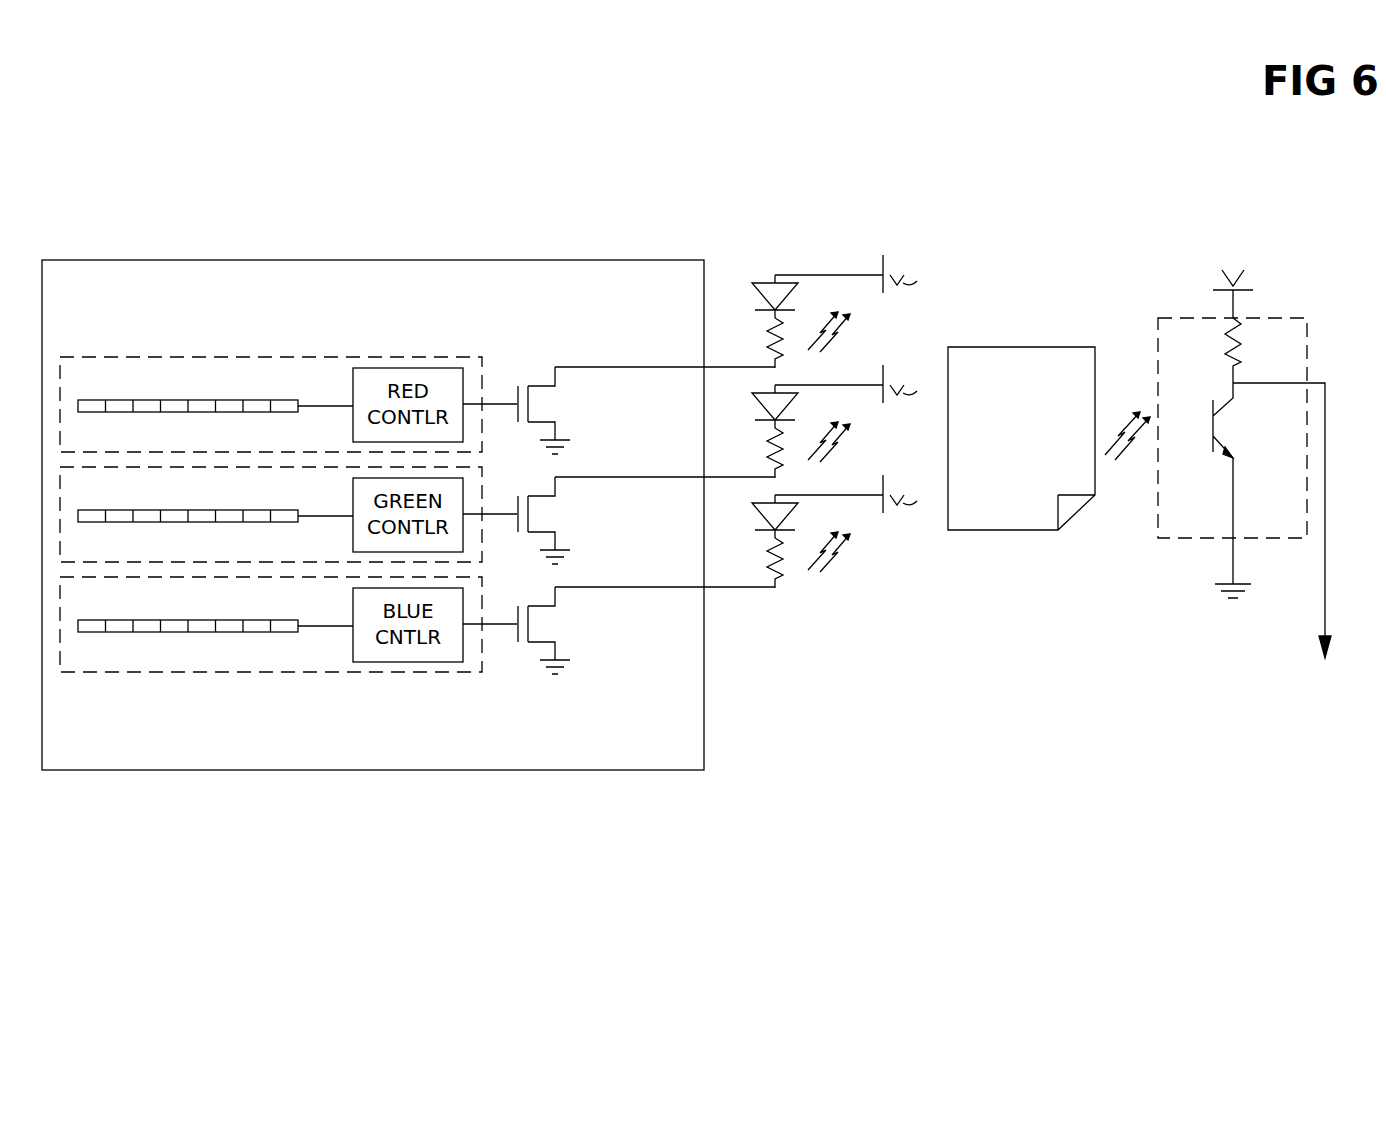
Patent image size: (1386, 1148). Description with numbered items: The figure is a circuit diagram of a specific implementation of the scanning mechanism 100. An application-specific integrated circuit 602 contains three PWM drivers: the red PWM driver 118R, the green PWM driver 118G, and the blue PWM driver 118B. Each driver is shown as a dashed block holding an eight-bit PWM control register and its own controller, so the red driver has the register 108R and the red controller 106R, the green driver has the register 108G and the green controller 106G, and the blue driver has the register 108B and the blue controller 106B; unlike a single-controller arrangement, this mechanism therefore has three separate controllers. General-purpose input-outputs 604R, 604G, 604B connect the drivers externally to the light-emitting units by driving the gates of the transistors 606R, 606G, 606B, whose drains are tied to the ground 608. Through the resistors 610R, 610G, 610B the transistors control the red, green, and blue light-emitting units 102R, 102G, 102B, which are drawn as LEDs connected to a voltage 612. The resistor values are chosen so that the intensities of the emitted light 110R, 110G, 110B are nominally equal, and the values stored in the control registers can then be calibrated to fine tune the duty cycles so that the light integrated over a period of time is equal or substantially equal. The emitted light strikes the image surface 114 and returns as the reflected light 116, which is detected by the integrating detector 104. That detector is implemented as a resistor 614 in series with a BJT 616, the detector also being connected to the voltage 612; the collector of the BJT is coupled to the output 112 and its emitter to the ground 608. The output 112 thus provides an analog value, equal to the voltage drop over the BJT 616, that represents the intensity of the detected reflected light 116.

The scanning mechanism 100 is at (190, 835).
The application-specific integrated circuit 602 is at (681, 290).
The red PWM driver 118R is at (117, 391).
The green PWM driver 118G is at (271, 514).
The blue PWM driver 118B is at (271, 624).
The eight-bit PWM control register 108R is at (196, 392).
The eight-bit PWM control register 108G is at (188, 501).
The eight-bit PWM control register 108B is at (188, 611).
The red controller 106R is at (353, 404).
The green controller 106G is at (312, 497).
The blue controller 106B is at (312, 607).
The GPIO 604R is at (499, 404).
The GPIO 604G is at (501, 485).
The GPIO 604B is at (501, 595).
The transistor 606R is at (546, 410).
The transistor 606G is at (576, 513).
The transistor 606B is at (575, 623).
The ground 608 is at (568, 452).
The resistor 610R is at (767, 350).
The resistor 610G is at (744, 449).
The resistor 610B is at (744, 559).
The red light-emitting unit 102R is at (790, 296).
The green light-emitting unit 102G is at (817, 402).
The blue light-emitting unit 102B is at (817, 512).
The voltage 612 is at (1233, 268).
The red light 110R is at (831, 340).
The green light 110G is at (866, 450).
The blue light 110B is at (857, 560).
The image surface 114 is at (1003, 475).
The reflected light 116 is at (1103, 457).
The integrating detector 104 is at (1299, 354).
The resistor 614 is at (1215, 332).
The BJT 616 is at (1220, 442).
The output 112 is at (1322, 652).